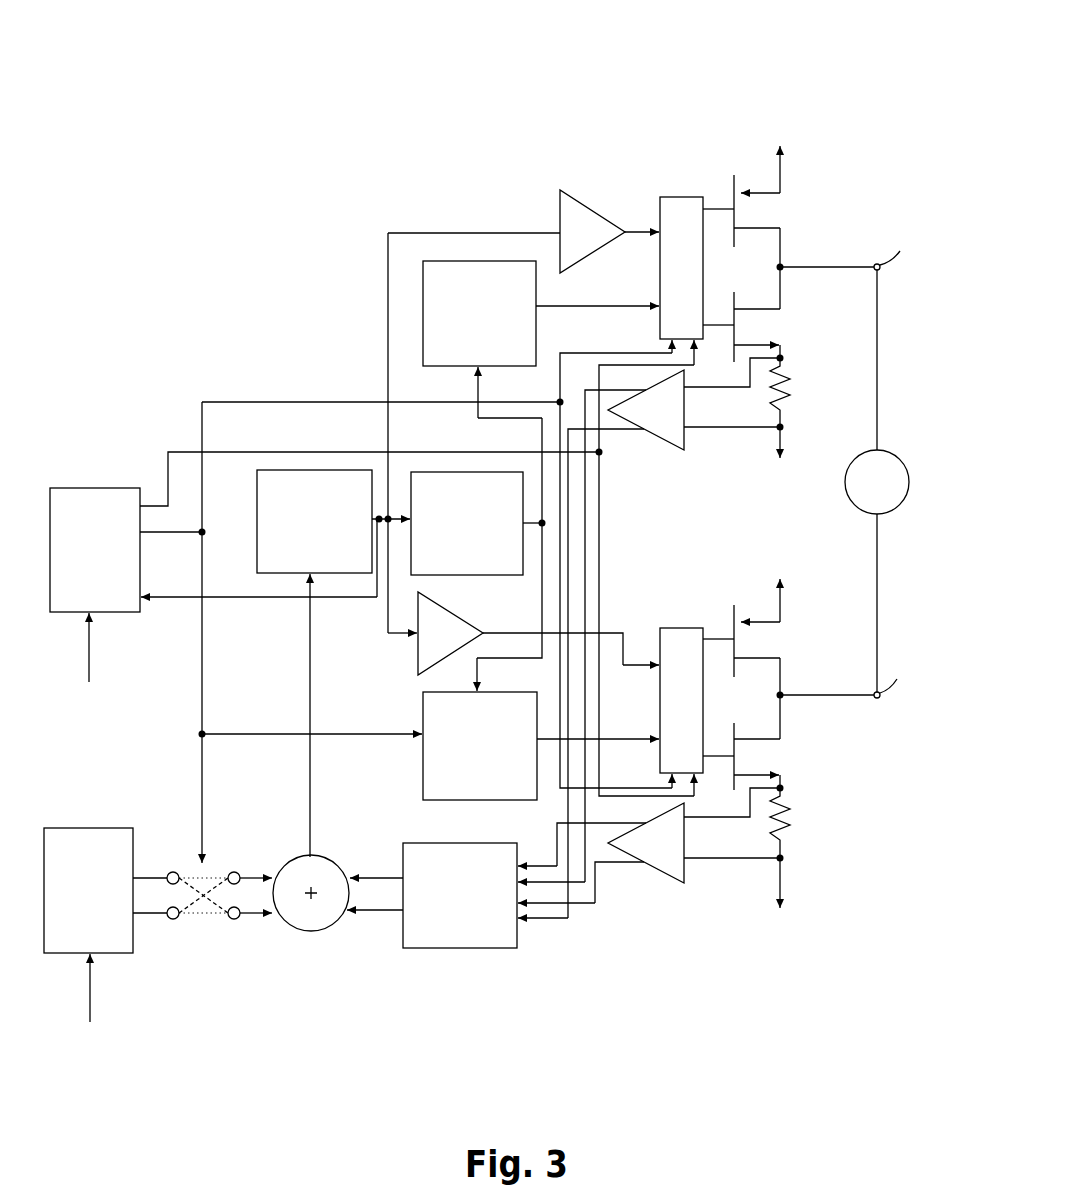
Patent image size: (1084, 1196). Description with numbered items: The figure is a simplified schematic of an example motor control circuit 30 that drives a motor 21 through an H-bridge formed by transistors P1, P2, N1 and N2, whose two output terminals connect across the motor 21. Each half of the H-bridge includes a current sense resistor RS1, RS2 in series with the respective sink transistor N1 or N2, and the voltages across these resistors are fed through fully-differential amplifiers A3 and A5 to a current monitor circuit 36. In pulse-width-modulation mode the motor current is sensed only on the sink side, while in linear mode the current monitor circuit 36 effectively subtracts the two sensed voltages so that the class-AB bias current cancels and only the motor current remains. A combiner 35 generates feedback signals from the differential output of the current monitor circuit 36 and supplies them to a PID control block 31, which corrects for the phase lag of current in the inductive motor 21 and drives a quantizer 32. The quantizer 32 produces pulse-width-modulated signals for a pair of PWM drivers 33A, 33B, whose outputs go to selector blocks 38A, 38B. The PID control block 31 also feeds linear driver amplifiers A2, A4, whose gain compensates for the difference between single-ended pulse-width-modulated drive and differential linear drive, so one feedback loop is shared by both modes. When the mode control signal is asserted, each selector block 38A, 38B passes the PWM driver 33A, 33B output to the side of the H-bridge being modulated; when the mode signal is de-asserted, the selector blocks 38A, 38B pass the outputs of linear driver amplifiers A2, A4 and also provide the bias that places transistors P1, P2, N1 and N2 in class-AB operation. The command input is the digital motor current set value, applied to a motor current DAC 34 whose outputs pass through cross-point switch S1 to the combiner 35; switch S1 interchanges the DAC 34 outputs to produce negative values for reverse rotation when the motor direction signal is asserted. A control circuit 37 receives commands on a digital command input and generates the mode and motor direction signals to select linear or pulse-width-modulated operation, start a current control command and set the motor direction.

The motor control circuit 30 is at (627, 60).
The motor 21 is at (901, 466).
The PID control block 31 is at (314, 521).
The quantizer 32 is at (467, 523).
The PWM driver 33A is at (479, 313).
The PWM driver 33B is at (480, 746).
The motor current DAC 34 is at (88, 890).
The combiner 35 is at (306, 935).
The current monitor circuit 36 is at (460, 895).
The control circuit 37 is at (95, 550).
The selector block 38A is at (677, 192).
The selector block 38B is at (683, 626).
The cross-point switch S1 is at (205, 927).
The linear driver amplifier A2 is at (592, 231).
The fully-differential amplifier A3 is at (646, 410).
The linear driver amplifier A4 is at (450, 633).
The fully-differential amplifier A5 is at (646, 843).
The transistor P1 is at (760, 196).
The transistor N1 is at (754, 327).
The transistor P2 is at (766, 628).
The transistor N2 is at (749, 756).
The current sense resistor RS1 is at (799, 392).
The current sense resistor RS2 is at (801, 823).